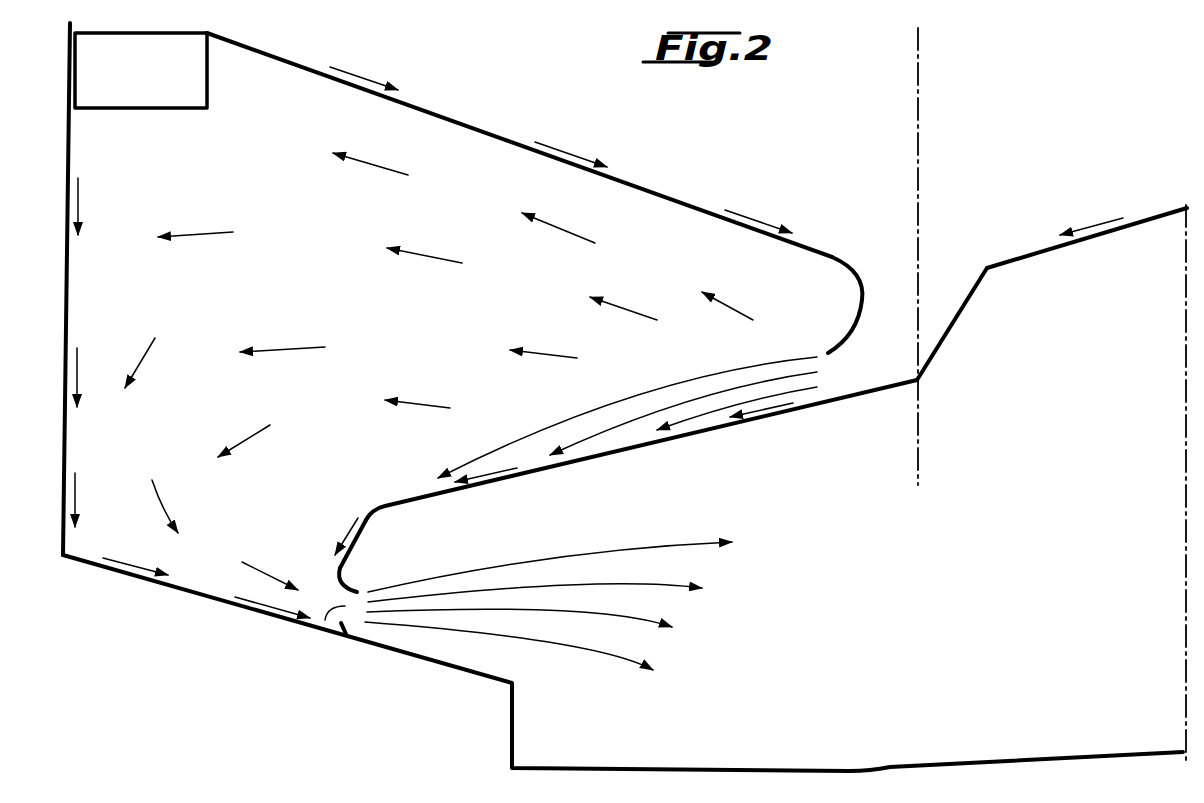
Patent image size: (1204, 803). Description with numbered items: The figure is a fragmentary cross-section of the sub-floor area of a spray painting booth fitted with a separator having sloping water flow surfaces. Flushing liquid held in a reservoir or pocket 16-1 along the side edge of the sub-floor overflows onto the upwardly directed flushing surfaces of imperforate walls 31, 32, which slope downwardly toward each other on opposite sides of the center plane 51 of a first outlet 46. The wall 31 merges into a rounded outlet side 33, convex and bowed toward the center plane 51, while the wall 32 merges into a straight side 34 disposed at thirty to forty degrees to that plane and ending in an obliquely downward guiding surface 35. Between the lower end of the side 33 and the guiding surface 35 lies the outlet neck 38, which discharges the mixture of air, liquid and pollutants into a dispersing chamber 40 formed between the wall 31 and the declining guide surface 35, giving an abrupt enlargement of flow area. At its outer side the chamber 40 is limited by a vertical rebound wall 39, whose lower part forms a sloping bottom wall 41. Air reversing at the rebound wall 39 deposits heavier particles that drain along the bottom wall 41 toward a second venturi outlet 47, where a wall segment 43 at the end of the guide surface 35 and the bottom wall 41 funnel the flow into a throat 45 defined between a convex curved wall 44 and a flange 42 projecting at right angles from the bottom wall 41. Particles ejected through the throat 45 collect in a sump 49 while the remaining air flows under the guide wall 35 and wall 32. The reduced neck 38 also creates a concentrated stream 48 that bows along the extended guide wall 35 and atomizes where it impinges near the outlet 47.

The reservoirs or pockets 16-1 is at (132, 96).
The imperforate wall 31 is at (688, 207).
The imperforate wall 32 is at (1017, 258).
The rounded outlet side 33 is at (864, 312).
The straight side 34 is at (950, 327).
The guiding surface 35 is at (826, 400).
The outlet neck 38 is at (837, 373).
The vertical rebound wall 39 is at (70, 293).
The dispersing chamber 40 is at (315, 311).
The bottom wall 41 is at (208, 598).
The flange 42 is at (347, 625).
The wall segment 43 is at (362, 528).
The convex curved wall 44 is at (346, 583).
The throat 45 is at (328, 622).
The first outlet 46 is at (900, 278).
The outlet 47 is at (328, 590).
The stream 48 is at (692, 410).
The sump 49 is at (895, 681).
The center plane 51 is at (920, 170).